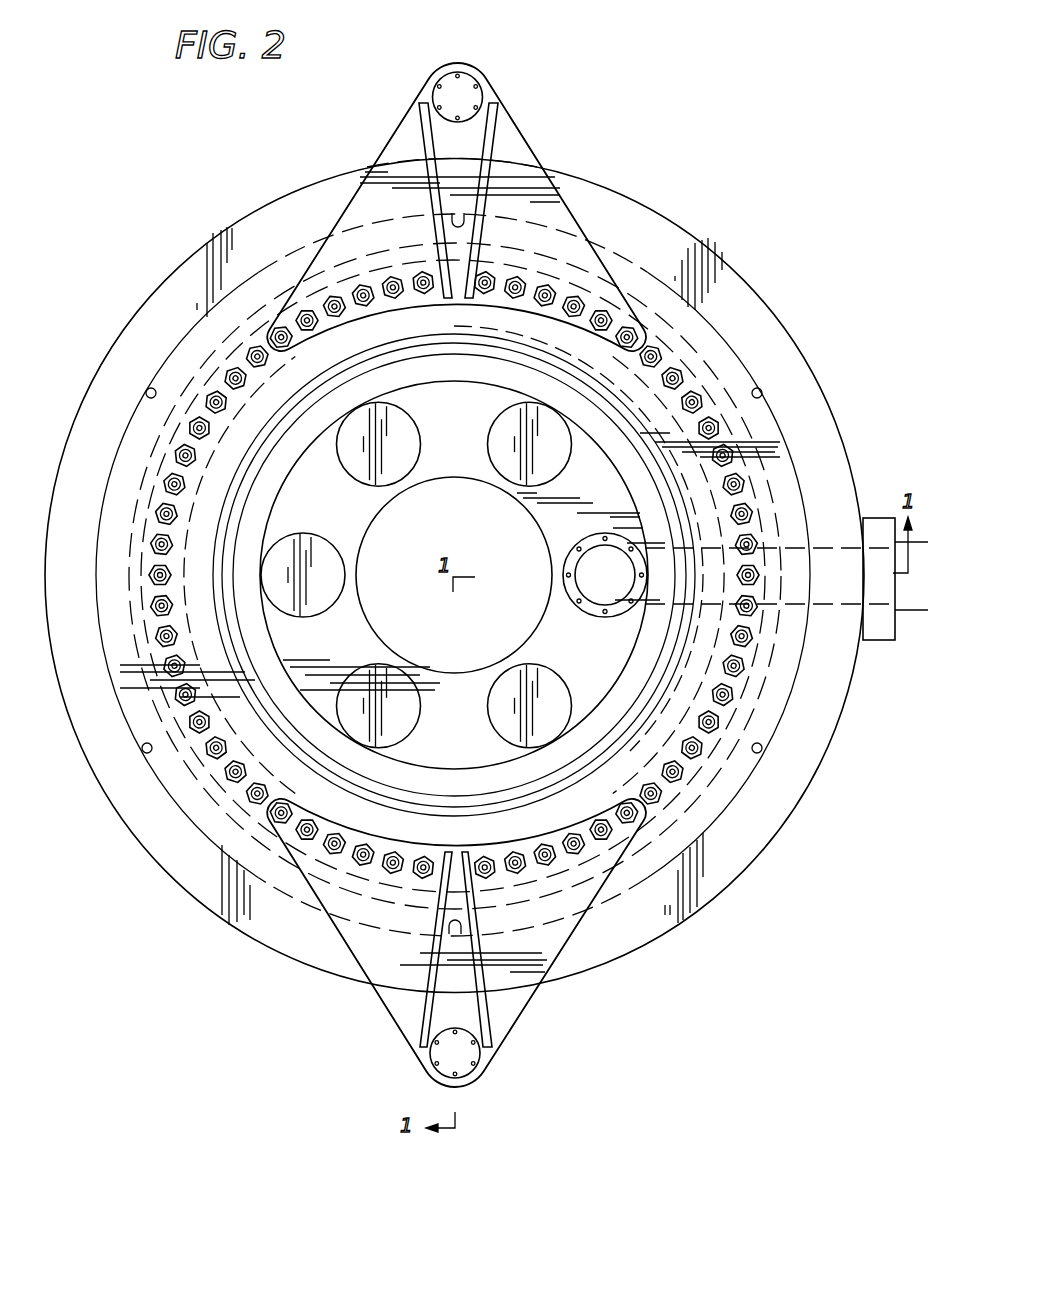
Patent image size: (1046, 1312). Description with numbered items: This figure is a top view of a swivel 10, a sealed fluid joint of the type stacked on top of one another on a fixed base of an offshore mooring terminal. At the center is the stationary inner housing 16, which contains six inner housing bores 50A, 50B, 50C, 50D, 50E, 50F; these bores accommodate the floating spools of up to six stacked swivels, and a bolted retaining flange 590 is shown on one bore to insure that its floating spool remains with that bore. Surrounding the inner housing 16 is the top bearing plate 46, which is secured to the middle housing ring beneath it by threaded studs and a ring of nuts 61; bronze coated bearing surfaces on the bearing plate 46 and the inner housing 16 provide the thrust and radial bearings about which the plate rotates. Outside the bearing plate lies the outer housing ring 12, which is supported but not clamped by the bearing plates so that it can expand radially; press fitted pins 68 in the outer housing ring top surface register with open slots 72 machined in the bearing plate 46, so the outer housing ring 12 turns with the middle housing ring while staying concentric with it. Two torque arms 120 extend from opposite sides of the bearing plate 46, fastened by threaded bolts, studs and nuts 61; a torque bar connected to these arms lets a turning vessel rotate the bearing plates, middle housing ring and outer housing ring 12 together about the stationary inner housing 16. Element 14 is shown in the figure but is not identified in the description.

The swivel 10 is at (781, 194).
The outer housing ring 12 is at (805, 415).
The intermediate ring 14 is at (716, 404).
The inner housing 16 is at (597, 452).
The top bearing plate 46 is at (790, 640).
The inner housing bore 50A is at (598, 548).
The inner housing bore 50B is at (508, 428).
The inner housing bore 50C is at (360, 467).
The inner housing bore 50D is at (322, 598).
The inner housing bore 50E is at (408, 718).
The inner housing bore 50F is at (560, 692).
The bolted retaining flange 590 is at (587, 570).
The nuts 61 is at (746, 668).
The press fitted pins 68 is at (762, 753).
The open slots 72 is at (755, 782).
The torque arms 120 is at (534, 183).